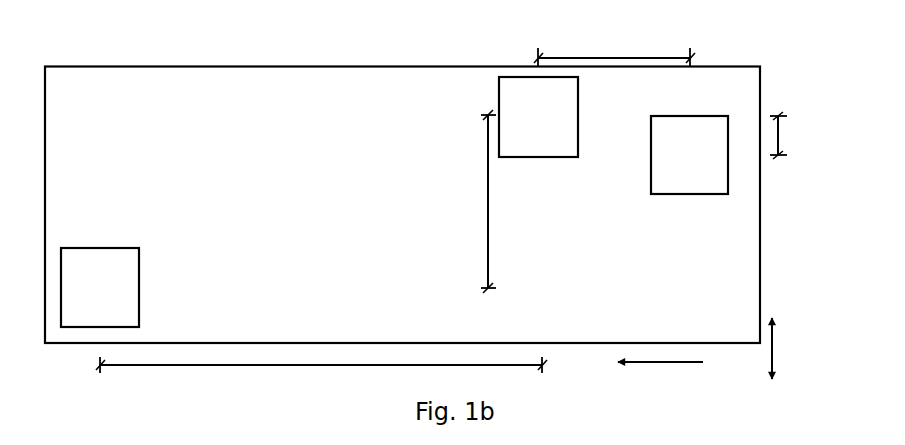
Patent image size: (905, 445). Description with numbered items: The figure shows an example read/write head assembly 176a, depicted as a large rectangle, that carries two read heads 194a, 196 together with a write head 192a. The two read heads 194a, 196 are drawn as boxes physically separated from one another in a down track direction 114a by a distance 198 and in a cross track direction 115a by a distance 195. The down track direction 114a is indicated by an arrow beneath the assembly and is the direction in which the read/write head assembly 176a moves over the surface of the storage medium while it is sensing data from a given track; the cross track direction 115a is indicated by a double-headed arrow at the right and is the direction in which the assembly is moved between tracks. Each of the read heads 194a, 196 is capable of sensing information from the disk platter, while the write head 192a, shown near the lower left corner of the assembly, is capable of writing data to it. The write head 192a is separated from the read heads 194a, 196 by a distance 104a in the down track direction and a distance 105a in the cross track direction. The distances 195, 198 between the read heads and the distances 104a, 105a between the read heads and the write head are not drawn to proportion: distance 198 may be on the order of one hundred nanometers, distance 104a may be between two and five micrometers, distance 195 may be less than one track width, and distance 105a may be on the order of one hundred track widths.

The read/write head assembly 176a is at (703, 332).
The write head 192a is at (81, 318).
The read head 194a is at (519, 146).
The read head 196 is at (675, 186).
The distance 198 is at (633, 57).
The distance 195 is at (780, 135).
The distance 105a is at (487, 149).
The distance 104a is at (311, 366).
The down track direction 114a is at (672, 364).
The cross track direction 115a is at (768, 373).